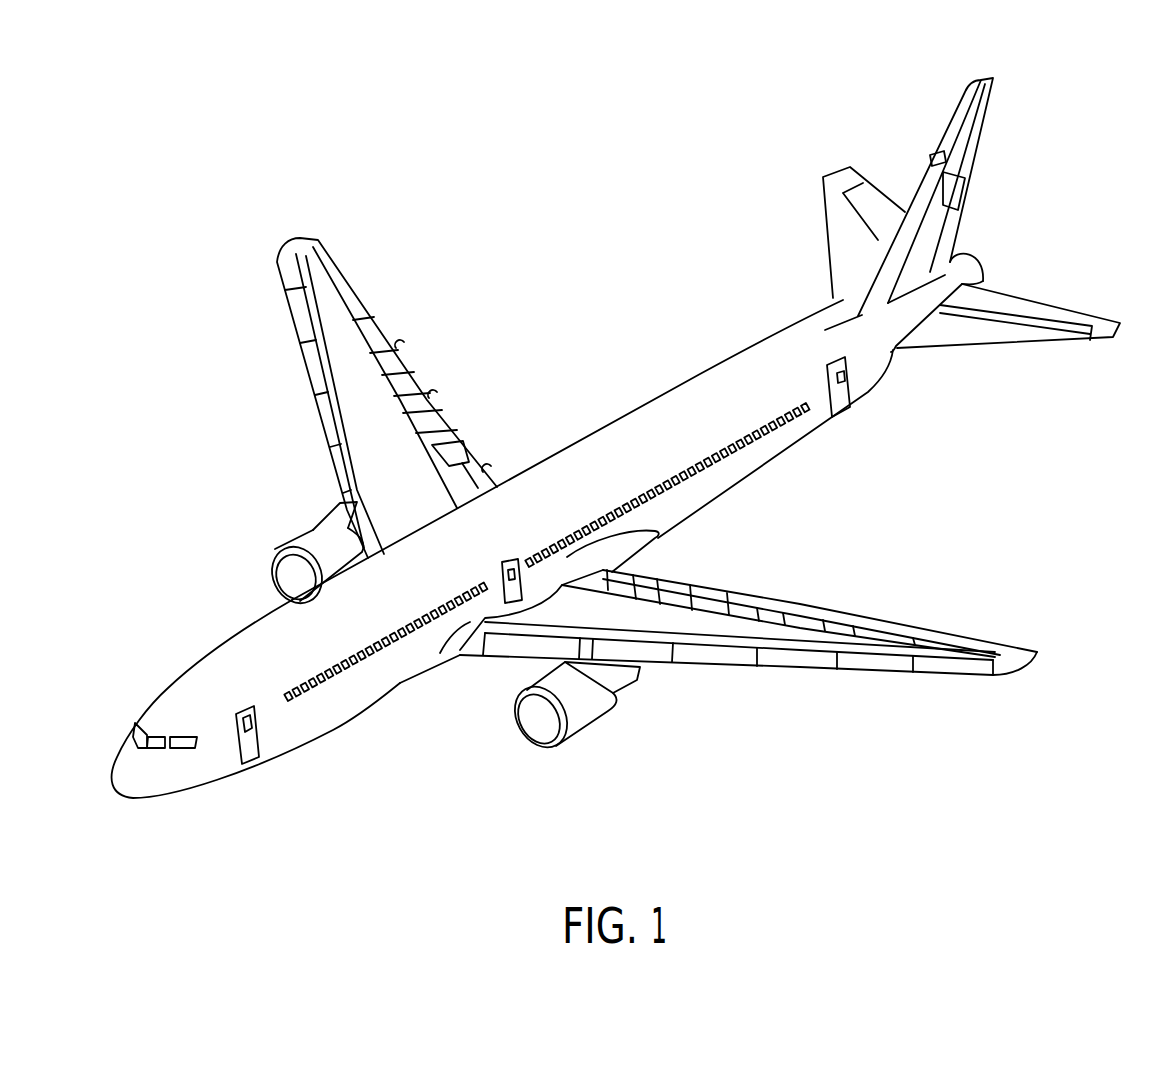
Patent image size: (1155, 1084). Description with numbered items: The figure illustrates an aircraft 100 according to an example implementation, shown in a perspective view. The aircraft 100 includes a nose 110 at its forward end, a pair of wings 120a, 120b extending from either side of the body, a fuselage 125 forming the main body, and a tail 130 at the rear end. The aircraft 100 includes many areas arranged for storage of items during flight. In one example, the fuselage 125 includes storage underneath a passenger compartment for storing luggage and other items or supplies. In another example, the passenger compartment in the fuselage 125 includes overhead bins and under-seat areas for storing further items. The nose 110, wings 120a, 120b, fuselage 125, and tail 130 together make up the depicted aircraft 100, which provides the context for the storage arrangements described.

The aircraft 100 is at (543, 364).
The nose 110 is at (132, 806).
The wing 120a is at (323, 235).
The wing 120b is at (1046, 650).
The fuselage 125 is at (713, 488).
The tail 130 is at (1004, 85).